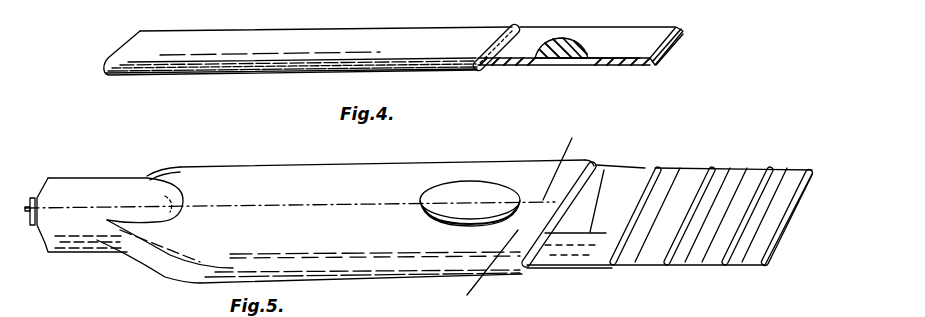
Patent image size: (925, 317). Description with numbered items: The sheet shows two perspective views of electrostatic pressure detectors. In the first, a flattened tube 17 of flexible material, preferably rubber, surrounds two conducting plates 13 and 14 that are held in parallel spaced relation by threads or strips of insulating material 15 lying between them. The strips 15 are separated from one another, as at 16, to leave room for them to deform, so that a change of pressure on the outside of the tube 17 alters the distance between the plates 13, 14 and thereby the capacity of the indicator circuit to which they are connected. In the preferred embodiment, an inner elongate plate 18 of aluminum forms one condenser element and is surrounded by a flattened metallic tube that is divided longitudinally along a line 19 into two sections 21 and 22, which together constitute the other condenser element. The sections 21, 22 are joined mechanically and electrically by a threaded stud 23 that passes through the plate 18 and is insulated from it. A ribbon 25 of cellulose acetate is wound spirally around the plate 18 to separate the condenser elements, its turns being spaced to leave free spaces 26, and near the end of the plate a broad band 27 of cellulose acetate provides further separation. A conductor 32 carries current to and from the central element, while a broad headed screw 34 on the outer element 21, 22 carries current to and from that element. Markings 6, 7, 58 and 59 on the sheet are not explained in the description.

In FIG. 5, the tubular body 6 is at (70, 262).
In FIG. 5, the section line 7 is at (560, 141).
In FIG. 4, the conducting plate 13 is at (667, 25).
In FIG. 4, the conducting plate 14 is at (664, 56).
In FIG. 4, the strips of insulating material 15 is at (637, 62).
In FIG. 4, the space between strips 16 is at (558, 62).
In FIG. 4, the flattened tube 17 is at (199, 67).
In FIG. 5, the inner elongate plate 18 is at (767, 250).
In FIG. 5, the division line 19 is at (607, 246).
In FIG. 5, the tube section 21 is at (570, 247).
In FIG. 5, the tube section 22 is at (640, 172).
In FIG. 5, the threaded stud 23 is at (556, 292).
In FIG. 5, the ribbon 25 is at (757, 173).
In FIG. 5, the free spaces 26 is at (695, 177).
In FIG. 5, the broad band of cellulose acetate 27 is at (797, 158).
In FIG. 5, the conductor 32 is at (26, 213).
In FIG. 5, the broad headed screws 34 is at (463, 192).
In FIG. 5, the element 58 is at (610, 311).
In FIG. 5, the element 59 is at (577, 311).